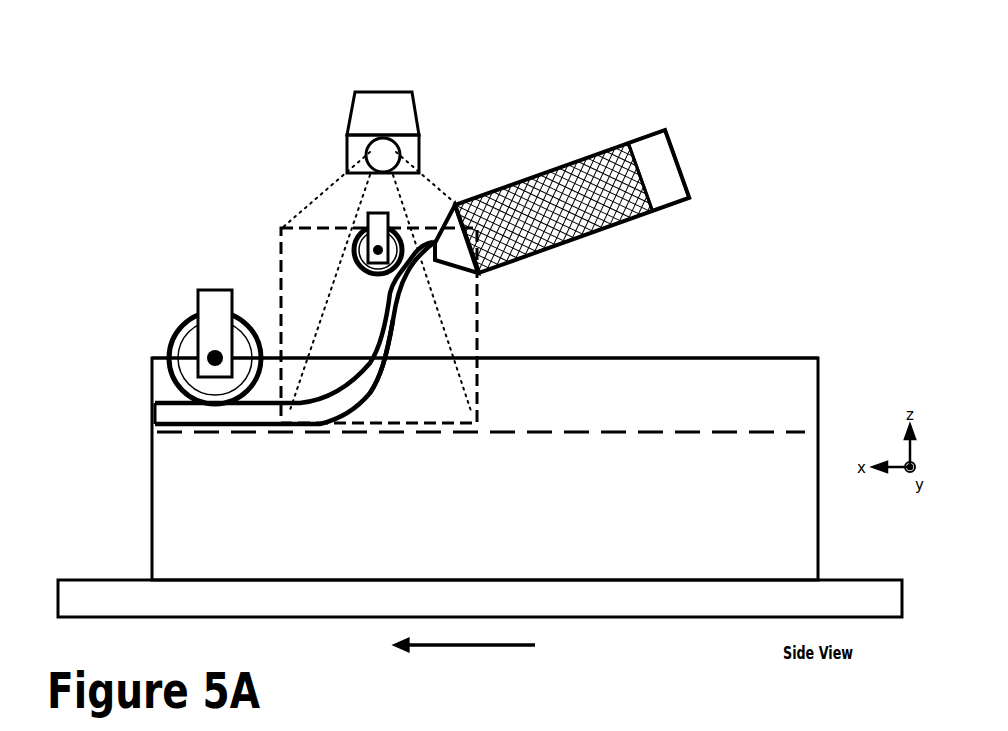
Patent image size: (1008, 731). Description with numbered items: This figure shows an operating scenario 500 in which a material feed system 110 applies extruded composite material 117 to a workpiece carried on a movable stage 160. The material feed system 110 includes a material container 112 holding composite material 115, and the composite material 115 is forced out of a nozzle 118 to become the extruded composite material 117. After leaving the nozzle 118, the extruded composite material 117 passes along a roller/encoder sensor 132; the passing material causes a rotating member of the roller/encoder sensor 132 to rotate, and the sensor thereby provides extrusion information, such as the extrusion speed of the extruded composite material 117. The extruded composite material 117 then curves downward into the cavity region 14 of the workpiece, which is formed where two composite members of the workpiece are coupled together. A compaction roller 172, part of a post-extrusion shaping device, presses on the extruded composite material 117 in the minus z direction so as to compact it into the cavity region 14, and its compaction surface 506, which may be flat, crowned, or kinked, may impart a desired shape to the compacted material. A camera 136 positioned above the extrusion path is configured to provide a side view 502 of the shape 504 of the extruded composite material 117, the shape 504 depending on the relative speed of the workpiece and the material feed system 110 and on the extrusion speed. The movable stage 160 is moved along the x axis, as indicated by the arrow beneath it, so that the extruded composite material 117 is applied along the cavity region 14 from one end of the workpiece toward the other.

The operating scenario 500 is at (786, 68).
The material feed system 110 is at (732, 191).
The material container 112 is at (684, 165).
The composite material 115 is at (553, 208).
The nozzle 118 is at (481, 253).
The camera 136 is at (365, 251).
The roller/encoder sensor 132 is at (348, 243).
The compaction roller 172 is at (168, 318).
The compaction surface 506 is at (168, 355).
The side view 502 is at (331, 323).
The shape 504 is at (295, 332).
The extruded composite material 117 is at (344, 332).
The cavity region 14 is at (689, 372).
The movable stage 160 is at (480, 618).